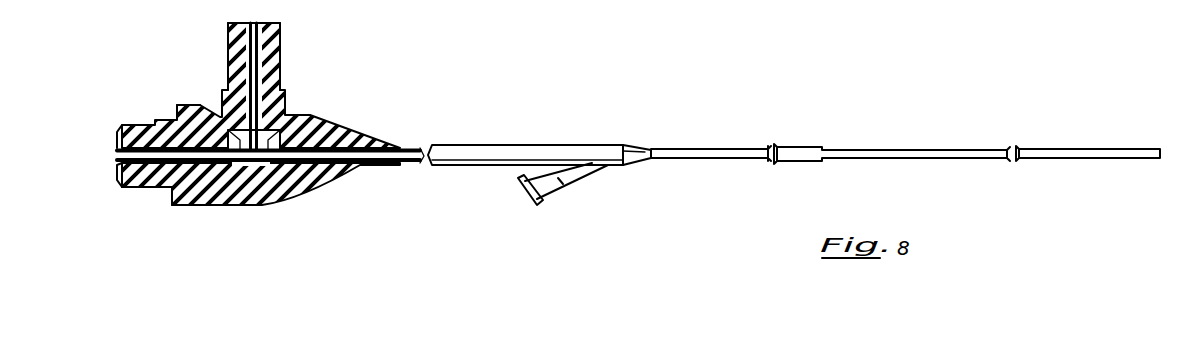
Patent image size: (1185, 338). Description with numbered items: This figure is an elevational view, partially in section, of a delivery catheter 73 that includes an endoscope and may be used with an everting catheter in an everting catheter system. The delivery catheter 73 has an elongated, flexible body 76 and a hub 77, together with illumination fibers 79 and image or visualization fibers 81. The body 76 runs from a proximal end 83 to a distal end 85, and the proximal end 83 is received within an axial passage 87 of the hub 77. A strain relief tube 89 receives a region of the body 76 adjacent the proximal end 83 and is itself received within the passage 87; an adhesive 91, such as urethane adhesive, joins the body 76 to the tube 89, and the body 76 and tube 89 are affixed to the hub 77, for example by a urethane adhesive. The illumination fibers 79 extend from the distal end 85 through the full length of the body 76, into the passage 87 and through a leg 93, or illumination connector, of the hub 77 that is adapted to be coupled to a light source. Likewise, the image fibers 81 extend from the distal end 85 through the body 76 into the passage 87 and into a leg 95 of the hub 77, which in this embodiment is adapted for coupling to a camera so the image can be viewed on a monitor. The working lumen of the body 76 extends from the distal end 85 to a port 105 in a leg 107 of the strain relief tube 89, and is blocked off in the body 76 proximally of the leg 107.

The delivery catheter 73 is at (575, 135).
The elongated, flexible body 76 is at (845, 150).
The hub 77 is at (185, 103).
The illumination fibers 79 is at (280, 78).
The image fibers 81 is at (160, 188).
The proximal end 83 is at (285, 192).
The distal end 85 is at (1160, 149).
The axial passage 87 is at (380, 165).
The strain relief tube 89 is at (515, 145).
The adhesive 91 is at (640, 166).
The leg 93 is at (280, 53).
The leg 95 is at (152, 132).
The port 105 is at (528, 206).
The leg 107 is at (562, 185).